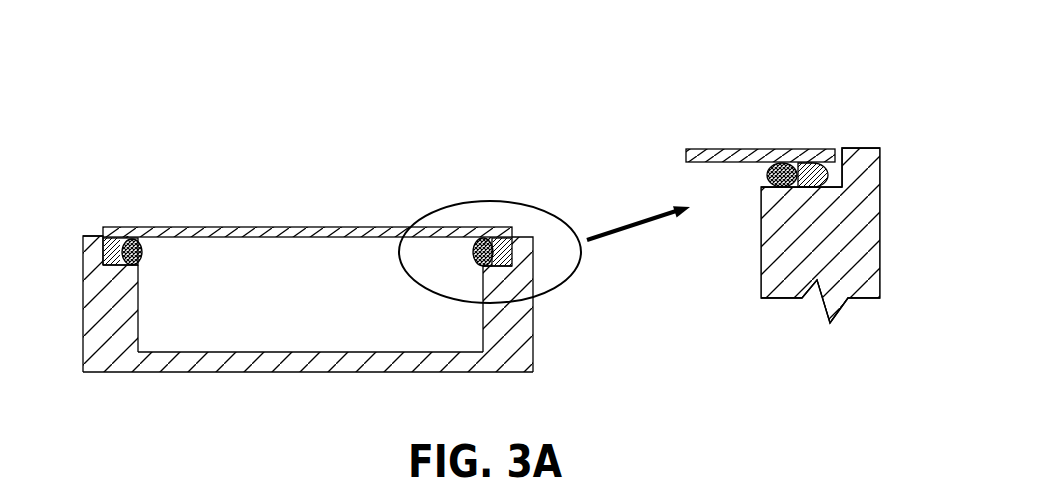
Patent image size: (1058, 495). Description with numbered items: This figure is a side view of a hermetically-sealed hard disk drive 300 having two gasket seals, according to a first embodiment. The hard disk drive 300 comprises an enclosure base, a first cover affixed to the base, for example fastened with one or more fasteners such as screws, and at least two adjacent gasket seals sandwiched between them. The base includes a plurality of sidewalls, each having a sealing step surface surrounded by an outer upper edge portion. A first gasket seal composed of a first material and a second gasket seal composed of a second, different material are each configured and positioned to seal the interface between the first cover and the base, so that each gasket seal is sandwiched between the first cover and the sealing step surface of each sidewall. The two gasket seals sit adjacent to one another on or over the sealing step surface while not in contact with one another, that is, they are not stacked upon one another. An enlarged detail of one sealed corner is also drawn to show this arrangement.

The hard disk drive 300 is at (238, 74).